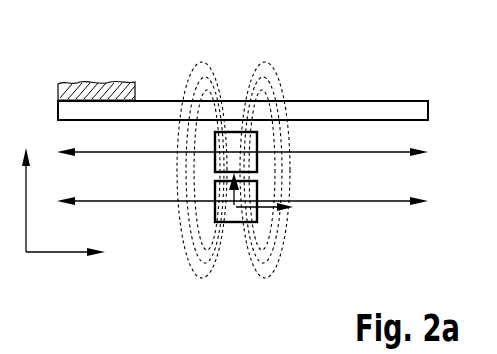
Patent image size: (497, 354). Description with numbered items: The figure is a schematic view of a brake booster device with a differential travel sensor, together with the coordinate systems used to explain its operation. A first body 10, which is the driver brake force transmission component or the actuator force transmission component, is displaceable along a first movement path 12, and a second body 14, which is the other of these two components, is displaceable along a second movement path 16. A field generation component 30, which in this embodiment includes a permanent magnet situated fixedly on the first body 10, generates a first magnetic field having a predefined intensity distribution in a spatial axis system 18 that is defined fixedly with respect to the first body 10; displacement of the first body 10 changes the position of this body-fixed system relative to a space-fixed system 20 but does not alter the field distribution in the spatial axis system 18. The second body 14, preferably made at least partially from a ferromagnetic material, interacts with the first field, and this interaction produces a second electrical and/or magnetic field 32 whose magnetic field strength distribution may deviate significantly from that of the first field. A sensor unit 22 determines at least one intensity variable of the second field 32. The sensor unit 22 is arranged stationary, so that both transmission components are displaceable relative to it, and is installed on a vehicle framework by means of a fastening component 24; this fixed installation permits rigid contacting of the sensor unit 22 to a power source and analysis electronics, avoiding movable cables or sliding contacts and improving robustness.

The first body 10 is at (215, 223).
The first movement path 12 is at (400, 203).
The second body 14 is at (215, 157).
The second movement path 16 is at (363, 153).
The spatial axis system 18 is at (258, 212).
The space-fixed system 20 is at (42, 253).
The sensor unit 22 is at (367, 108).
The fastening component 24 is at (100, 90).
The field generation component 30 is at (237, 223).
The second electrical and/or magnetic field 32 is at (290, 68).